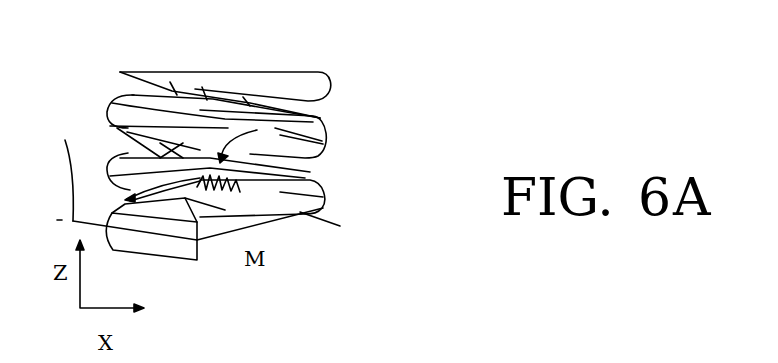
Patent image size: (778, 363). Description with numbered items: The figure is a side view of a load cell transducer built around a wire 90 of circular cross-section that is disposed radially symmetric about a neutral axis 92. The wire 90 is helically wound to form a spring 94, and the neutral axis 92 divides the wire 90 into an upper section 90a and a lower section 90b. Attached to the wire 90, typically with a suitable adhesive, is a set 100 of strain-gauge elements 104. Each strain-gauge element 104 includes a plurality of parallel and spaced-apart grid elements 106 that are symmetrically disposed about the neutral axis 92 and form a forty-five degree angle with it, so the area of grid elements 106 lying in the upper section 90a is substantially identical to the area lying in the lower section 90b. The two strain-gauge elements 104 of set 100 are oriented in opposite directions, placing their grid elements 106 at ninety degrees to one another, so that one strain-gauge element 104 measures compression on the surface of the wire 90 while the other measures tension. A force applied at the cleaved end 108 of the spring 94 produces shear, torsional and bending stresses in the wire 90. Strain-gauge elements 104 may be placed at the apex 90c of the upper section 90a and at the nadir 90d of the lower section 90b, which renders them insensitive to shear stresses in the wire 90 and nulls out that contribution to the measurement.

The wire 90 is at (298, 89).
The upper section 90a is at (318, 196).
The lower section 90b is at (318, 213).
The apex 90c is at (313, 175).
The nadir 90d is at (275, 231).
The neutral axis 92 is at (118, 157).
The spring 94 is at (211, 48).
The set of strain-gauge elements 100 is at (328, 143).
The strain-gauge element 104 is at (250, 185).
The grid elements 106 is at (141, 226).
The cleaved end 108 is at (211, 218).